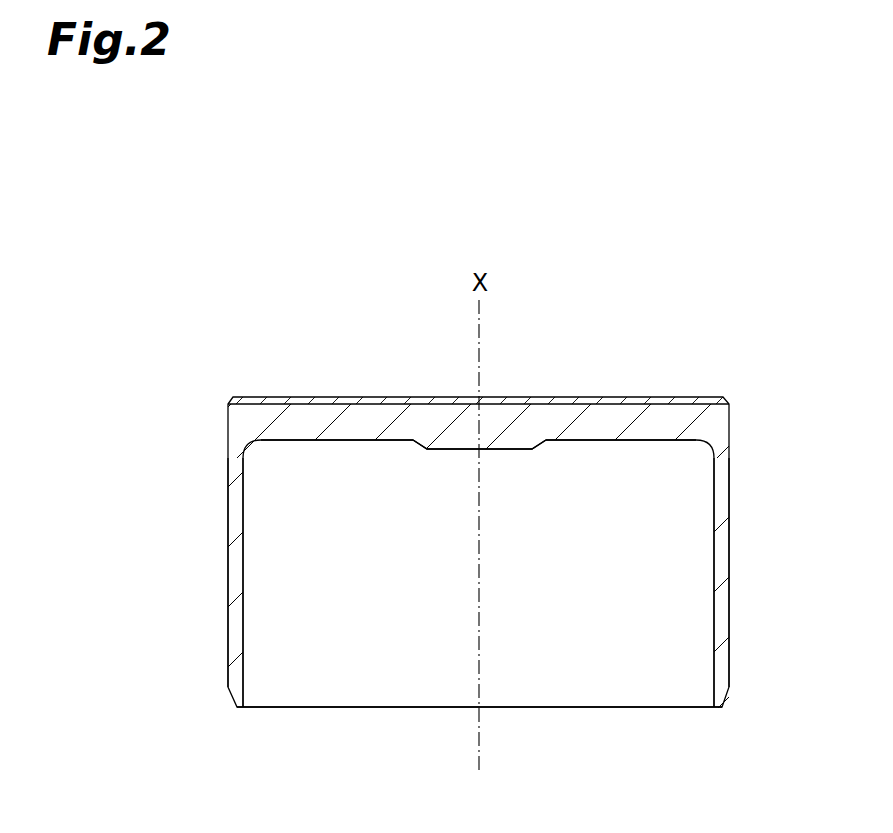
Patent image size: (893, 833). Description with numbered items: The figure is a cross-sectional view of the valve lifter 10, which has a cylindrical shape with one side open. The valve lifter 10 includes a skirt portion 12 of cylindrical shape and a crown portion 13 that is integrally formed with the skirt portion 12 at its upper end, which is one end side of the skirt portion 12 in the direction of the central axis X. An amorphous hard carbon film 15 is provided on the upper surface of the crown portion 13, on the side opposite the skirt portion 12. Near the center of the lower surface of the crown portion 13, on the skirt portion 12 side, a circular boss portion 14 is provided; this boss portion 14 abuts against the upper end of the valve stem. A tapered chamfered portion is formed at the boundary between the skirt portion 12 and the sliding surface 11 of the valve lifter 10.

The valve lifter 10 is at (676, 322).
The sliding surface 11 is at (566, 397).
The skirt portion 12 is at (228, 520).
The crown portion 13 is at (302, 408).
The boss portion 14 is at (438, 447).
The amorphous hard carbon film 15 is at (249, 397).